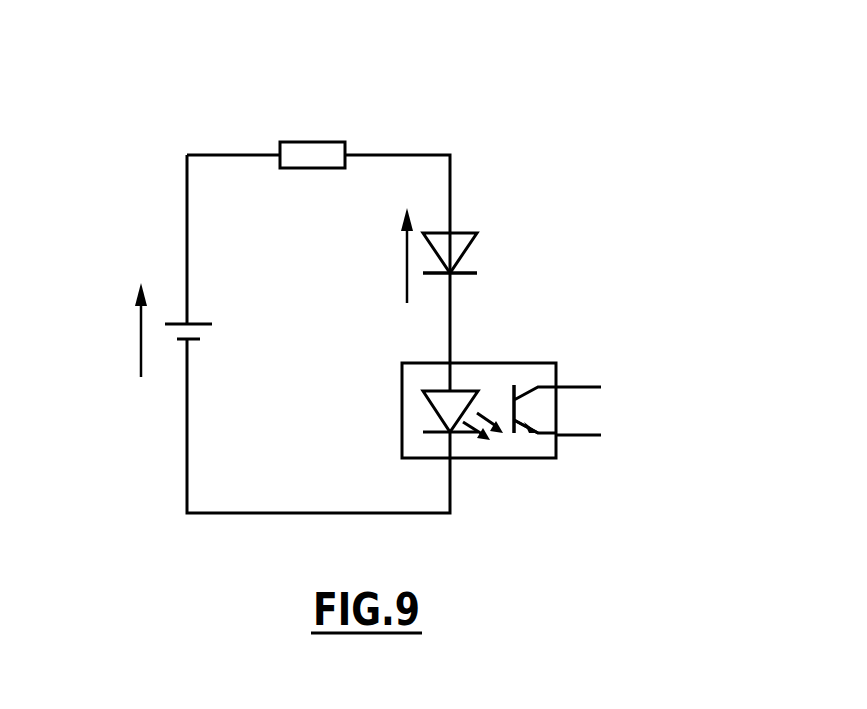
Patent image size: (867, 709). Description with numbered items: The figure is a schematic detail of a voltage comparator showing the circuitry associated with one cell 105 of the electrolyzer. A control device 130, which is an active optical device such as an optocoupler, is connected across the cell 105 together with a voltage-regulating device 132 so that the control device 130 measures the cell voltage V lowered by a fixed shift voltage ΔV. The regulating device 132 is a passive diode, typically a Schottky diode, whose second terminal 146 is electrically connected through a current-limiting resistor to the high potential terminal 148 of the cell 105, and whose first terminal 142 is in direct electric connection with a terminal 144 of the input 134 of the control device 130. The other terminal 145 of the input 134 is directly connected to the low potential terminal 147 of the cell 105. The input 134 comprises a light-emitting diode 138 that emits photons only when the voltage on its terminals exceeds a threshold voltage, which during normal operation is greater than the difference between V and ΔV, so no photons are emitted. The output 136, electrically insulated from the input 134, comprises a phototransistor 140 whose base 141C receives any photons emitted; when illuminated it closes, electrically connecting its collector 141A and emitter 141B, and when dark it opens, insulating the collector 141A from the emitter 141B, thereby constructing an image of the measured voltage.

The cell 105 is at (148, 246).
The high potential terminal 148 is at (187, 155).
The low potential terminal 147 is at (187, 513).
The voltage-regulating device 132 is at (481, 210).
The second terminal 146 is at (450, 233).
The first terminal 142 is at (452, 273).
The control device 130 is at (528, 340).
The light-emitting diode 138 is at (438, 404).
The terminal 144 is at (449, 388).
The other terminal 145 is at (447, 440).
The input 134 is at (468, 458).
The phototransistor 140 is at (534, 364).
The base 141C is at (513, 400).
The output 136 is at (532, 462).
The collector 141A is at (592, 384).
The emitter 141B is at (590, 438).